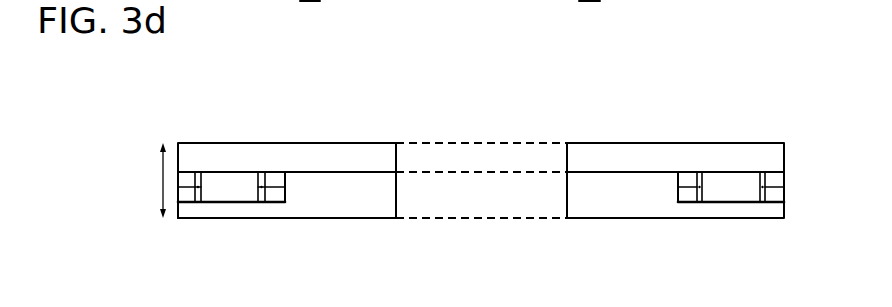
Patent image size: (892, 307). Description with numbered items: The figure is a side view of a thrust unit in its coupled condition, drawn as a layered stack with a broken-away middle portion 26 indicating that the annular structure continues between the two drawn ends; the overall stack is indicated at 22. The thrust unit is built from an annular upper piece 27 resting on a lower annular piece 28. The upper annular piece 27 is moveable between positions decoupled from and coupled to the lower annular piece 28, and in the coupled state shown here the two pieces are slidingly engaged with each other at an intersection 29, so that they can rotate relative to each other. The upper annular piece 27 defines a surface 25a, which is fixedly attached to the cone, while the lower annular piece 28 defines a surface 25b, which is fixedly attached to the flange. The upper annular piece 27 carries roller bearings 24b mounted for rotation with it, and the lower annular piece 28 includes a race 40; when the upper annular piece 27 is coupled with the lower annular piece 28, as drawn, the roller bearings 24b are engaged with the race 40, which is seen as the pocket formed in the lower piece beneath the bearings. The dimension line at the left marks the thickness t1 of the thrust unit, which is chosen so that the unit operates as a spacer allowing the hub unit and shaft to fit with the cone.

The layered structure 22 is at (324, 128).
The upper annular piece 27 is at (186, 155).
The lower annular piece 28 is at (339, 205).
The roller bearings 24b is at (228, 183).
The intersection 29 is at (302, 172).
The surface 25a is at (380, 143).
The surface 25b is at (375, 218).
The intermediate region (break) 26 is at (468, 128).
The race 40 is at (223, 210).
The thickness t1 is at (161, 172).